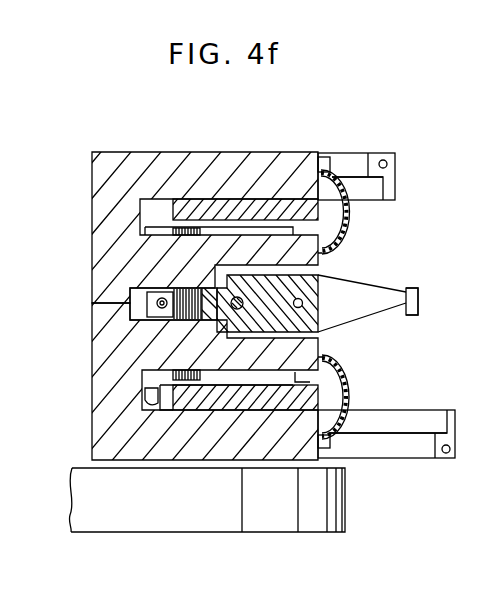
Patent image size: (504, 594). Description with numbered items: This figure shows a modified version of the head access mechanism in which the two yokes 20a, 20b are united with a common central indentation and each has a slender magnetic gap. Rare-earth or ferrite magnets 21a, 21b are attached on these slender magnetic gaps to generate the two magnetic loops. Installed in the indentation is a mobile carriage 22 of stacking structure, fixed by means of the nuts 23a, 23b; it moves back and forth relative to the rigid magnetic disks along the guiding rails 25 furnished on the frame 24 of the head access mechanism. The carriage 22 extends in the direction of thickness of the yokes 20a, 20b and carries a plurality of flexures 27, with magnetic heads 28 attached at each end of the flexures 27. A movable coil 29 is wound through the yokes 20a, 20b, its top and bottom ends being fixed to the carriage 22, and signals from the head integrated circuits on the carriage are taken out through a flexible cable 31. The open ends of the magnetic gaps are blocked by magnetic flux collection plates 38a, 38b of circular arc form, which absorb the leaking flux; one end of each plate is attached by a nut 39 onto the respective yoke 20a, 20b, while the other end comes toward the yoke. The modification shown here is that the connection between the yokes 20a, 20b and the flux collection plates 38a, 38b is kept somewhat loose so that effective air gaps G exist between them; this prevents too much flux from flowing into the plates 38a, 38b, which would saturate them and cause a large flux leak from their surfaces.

The yoke 20a is at (92, 246).
The yoke 20b is at (92, 401).
The magnet 21a is at (258, 205).
The magnet 21b is at (288, 403).
The mobile carriage 22 is at (318, 275).
The nut 23a is at (209, 321).
The nut 23b is at (160, 321).
The frame 24 is at (343, 162).
The guiding rail 25 is at (375, 195).
The flexure 27 is at (395, 309).
The magnetic head 28 is at (420, 313).
The movable coil 29 is at (187, 228).
The flexible cable 31 is at (256, 526).
The magnetic flux collection plate 38a is at (350, 230).
The magnetic flux collection plate 38b is at (332, 362).
The nut 39 is at (320, 158).
The air gap G is at (322, 253).